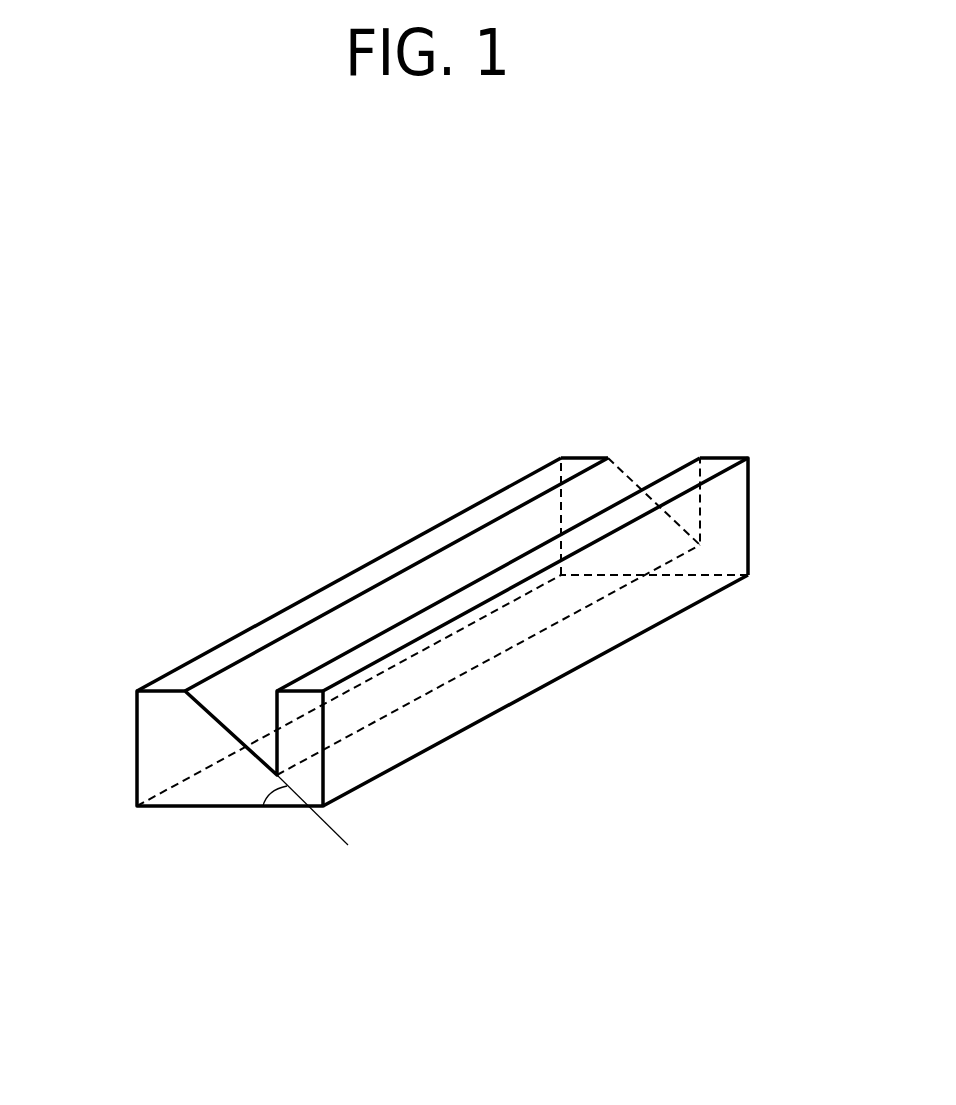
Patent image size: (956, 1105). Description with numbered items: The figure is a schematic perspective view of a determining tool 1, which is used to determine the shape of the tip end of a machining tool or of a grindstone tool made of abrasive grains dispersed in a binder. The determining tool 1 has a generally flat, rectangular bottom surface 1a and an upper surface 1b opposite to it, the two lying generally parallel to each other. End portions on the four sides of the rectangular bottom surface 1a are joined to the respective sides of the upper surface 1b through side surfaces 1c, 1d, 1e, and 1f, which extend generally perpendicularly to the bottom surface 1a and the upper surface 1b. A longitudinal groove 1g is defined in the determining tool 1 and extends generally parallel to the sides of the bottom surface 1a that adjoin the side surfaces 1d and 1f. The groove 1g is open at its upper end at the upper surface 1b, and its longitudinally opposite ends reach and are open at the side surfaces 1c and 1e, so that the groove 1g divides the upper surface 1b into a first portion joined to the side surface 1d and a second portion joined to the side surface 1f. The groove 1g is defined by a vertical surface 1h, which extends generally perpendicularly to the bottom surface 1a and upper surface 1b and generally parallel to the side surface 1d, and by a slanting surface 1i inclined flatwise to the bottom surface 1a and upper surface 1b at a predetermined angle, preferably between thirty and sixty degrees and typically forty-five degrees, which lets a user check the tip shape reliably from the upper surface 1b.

The determining tool 1 is at (344, 417).
The bottom surface 1a is at (415, 732).
The upper surface 1b is at (410, 627).
The side surface 1c is at (218, 787).
The side surface 1d is at (627, 625).
The side surface 1e is at (735, 508).
The side surface 1f is at (150, 727).
The groove 1g is at (710, 352).
The vertical surface 1h is at (672, 490).
The slanting surface 1i is at (590, 492).